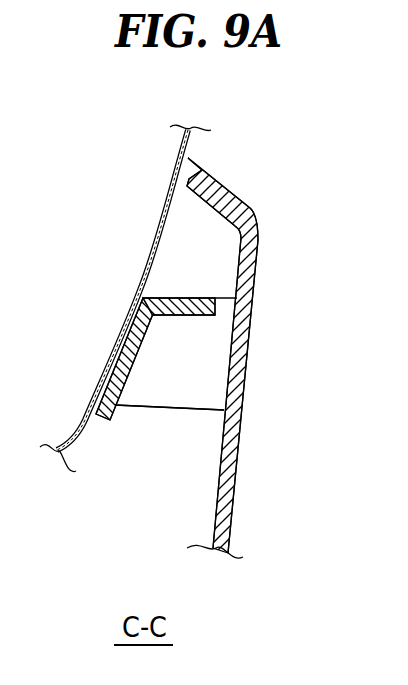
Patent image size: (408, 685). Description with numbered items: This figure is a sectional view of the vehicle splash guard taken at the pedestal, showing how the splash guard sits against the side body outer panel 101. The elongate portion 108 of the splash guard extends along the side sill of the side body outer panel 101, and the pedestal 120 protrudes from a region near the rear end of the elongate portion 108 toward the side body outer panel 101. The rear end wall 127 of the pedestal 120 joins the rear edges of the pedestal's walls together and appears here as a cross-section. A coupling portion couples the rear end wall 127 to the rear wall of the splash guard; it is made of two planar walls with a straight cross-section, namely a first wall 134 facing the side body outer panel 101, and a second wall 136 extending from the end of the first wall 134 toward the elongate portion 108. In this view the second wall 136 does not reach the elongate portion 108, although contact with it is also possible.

The side body outer panel 101 is at (163, 229).
The elongate portion 108 is at (244, 352).
The second wall 136 is at (181, 299).
The first wall 134 is at (103, 423).
The rear end wall 127 is at (190, 388).
The pedestal 120 is at (157, 409).